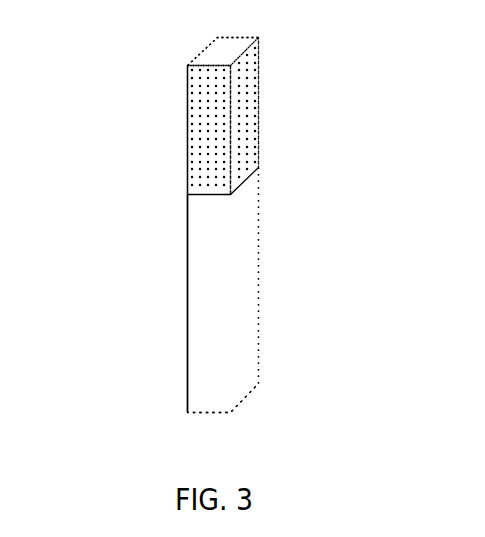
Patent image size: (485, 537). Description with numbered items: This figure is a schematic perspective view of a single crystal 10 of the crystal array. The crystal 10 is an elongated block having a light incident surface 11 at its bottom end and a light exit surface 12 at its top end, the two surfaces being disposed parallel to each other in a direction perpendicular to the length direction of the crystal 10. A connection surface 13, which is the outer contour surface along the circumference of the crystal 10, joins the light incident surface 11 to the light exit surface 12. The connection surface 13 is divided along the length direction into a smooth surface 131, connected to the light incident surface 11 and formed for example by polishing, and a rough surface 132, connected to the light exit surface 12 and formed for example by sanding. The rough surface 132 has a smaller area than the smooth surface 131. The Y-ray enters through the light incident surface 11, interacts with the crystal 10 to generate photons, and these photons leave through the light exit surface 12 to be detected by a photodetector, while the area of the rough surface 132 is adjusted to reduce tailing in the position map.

The crystal 10 is at (303, 187).
The light incident surface 11 is at (210, 413).
The light exit surface 12 is at (216, 57).
The connection surface 13 is at (100, 102).
The smooth surface 131 is at (207, 268).
The rough surface 132 is at (208, 152).